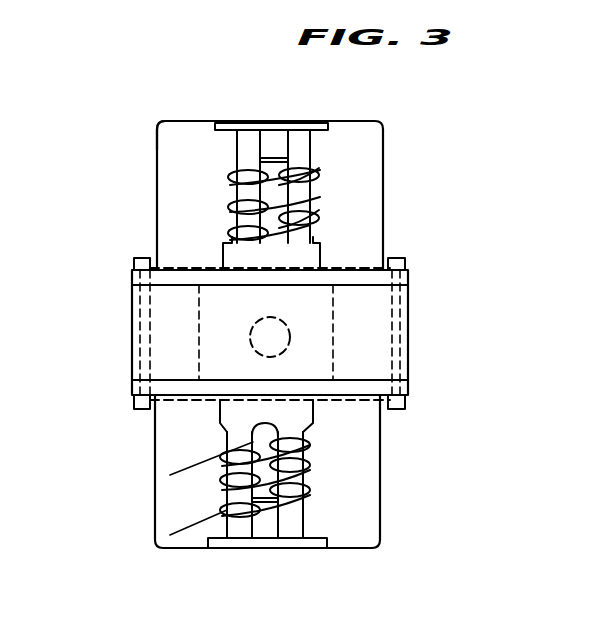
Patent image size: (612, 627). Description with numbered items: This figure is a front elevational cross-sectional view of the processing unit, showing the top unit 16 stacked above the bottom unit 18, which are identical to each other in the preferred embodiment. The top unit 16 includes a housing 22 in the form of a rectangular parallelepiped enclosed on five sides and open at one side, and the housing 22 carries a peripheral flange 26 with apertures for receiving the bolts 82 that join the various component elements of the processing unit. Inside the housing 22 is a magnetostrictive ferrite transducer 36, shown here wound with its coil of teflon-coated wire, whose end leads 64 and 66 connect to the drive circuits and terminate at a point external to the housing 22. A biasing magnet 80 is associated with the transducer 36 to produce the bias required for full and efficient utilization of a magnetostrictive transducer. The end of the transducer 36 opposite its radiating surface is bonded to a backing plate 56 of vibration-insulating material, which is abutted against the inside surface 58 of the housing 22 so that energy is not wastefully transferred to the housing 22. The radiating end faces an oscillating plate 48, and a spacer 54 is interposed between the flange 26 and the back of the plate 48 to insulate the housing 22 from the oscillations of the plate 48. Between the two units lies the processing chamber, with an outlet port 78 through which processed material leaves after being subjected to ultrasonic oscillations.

The top unit 16 is at (383, 210).
The bottom unit 18 is at (382, 480).
The housing 22 is at (218, 122).
The peripheral flange 26 is at (407, 263).
The transducer 36 is at (300, 172).
The plate 48 is at (408, 283).
The spacer 54 is at (340, 268).
The backing plate 56 is at (286, 124).
The inside surface 58 is at (190, 122).
The end lead 64 is at (235, 233).
The end lead 66 is at (235, 170).
The outlet port 78 is at (273, 350).
The biasing magnet 80 is at (303, 142).
The bolts 82 is at (142, 312).